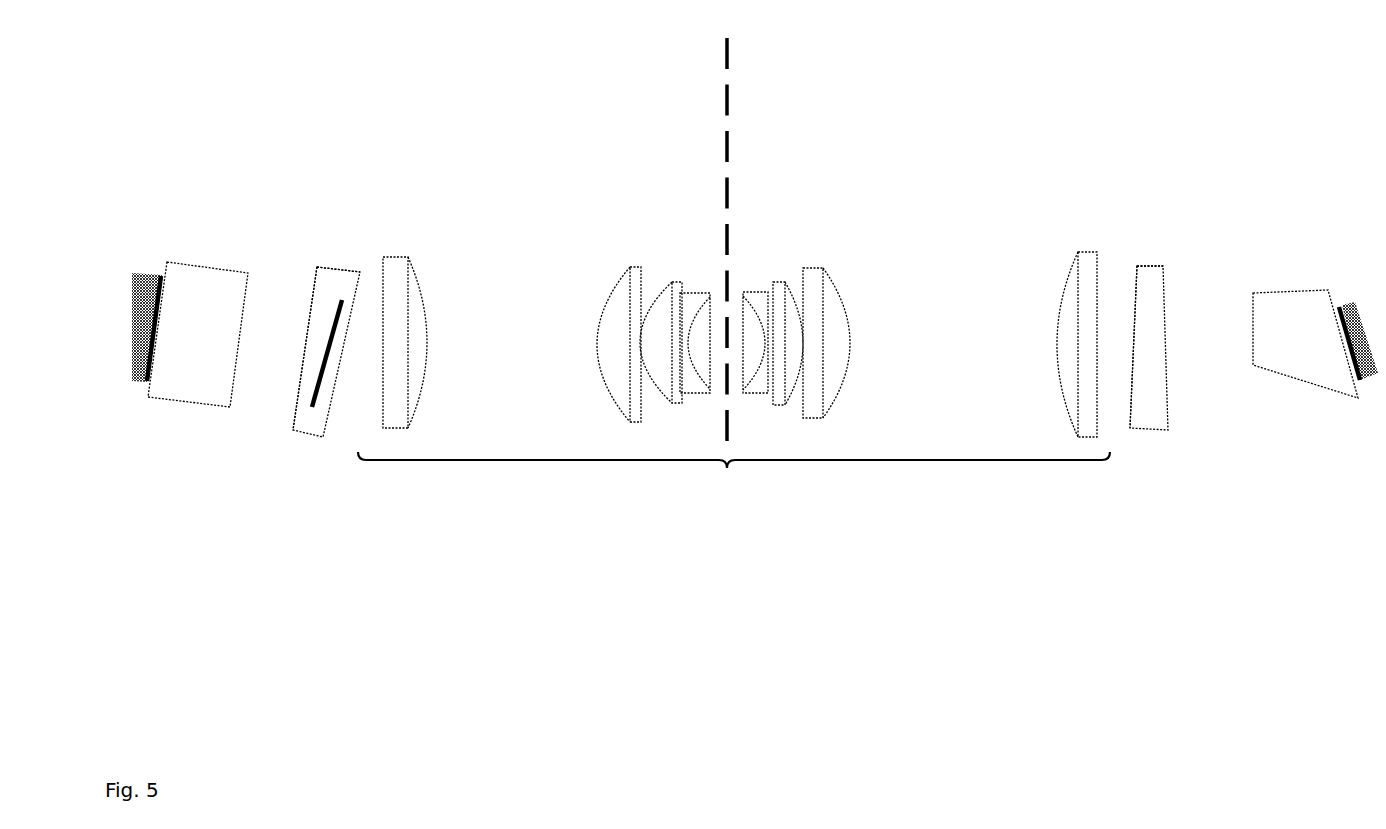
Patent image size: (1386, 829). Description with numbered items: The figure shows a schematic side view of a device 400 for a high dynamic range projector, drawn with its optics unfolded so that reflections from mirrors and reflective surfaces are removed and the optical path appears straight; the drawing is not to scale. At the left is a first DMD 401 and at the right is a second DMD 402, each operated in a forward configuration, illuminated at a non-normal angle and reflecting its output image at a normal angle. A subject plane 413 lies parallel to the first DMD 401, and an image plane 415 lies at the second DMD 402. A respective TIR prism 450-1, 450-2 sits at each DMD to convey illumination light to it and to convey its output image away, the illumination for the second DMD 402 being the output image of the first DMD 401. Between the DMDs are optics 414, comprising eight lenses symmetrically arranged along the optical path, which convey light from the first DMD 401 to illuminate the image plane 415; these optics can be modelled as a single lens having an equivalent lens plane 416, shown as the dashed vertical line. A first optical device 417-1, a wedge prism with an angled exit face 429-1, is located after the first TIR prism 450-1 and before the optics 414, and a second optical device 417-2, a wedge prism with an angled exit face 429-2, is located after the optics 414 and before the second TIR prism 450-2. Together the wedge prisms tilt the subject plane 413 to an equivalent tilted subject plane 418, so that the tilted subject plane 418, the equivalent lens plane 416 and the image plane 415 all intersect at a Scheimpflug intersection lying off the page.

The device 400 is at (258, 613).
The first DMD 401 is at (175, 378).
The second DMD 402 is at (1319, 349).
The subject plane 413 is at (145, 385).
The optics 414 is at (734, 378).
The image plane 415 is at (1377, 380).
The equivalent lens plane 416 is at (733, 98).
The first optical device 417-1 is at (337, 277).
The second optical device 417-2 is at (1157, 267).
The equivalent tilted subject plane 418 is at (310, 410).
The exit face of first wedge prism 429-1 is at (350, 380).
The exit face of second wedge prism 429-2 is at (1191, 346).
The first TIR prism 450-1 is at (205, 400).
The second TIR prism 450-2 is at (1307, 383).